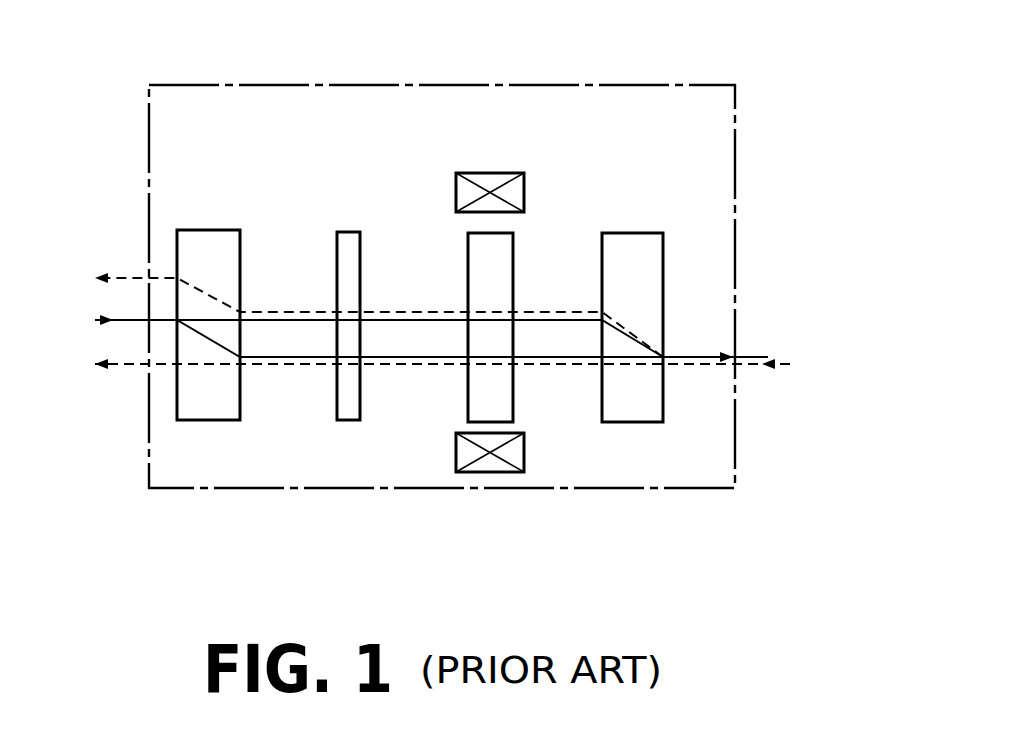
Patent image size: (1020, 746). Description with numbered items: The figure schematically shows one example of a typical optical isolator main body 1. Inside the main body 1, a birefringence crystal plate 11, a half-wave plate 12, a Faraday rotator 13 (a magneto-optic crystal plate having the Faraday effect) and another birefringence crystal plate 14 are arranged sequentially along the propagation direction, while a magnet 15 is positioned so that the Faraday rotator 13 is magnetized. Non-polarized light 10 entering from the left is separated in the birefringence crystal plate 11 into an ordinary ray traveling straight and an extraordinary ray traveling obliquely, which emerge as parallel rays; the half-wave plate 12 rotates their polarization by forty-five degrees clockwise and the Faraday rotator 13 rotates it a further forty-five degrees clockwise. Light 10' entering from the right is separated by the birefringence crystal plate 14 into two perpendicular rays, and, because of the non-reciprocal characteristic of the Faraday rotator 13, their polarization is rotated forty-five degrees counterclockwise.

The optical isolator main body 1 is at (350, 85).
The non-polarized light 10 is at (417, 375).
The incident light 10' is at (457, 359).
The birefringence crystal plate 11 is at (212, 230).
The half-wave plate 12 is at (350, 232).
The Faraday rotator 13 is at (513, 262).
The birefringence crystal plate 14 is at (650, 233).
The magnet 15 is at (472, 173).